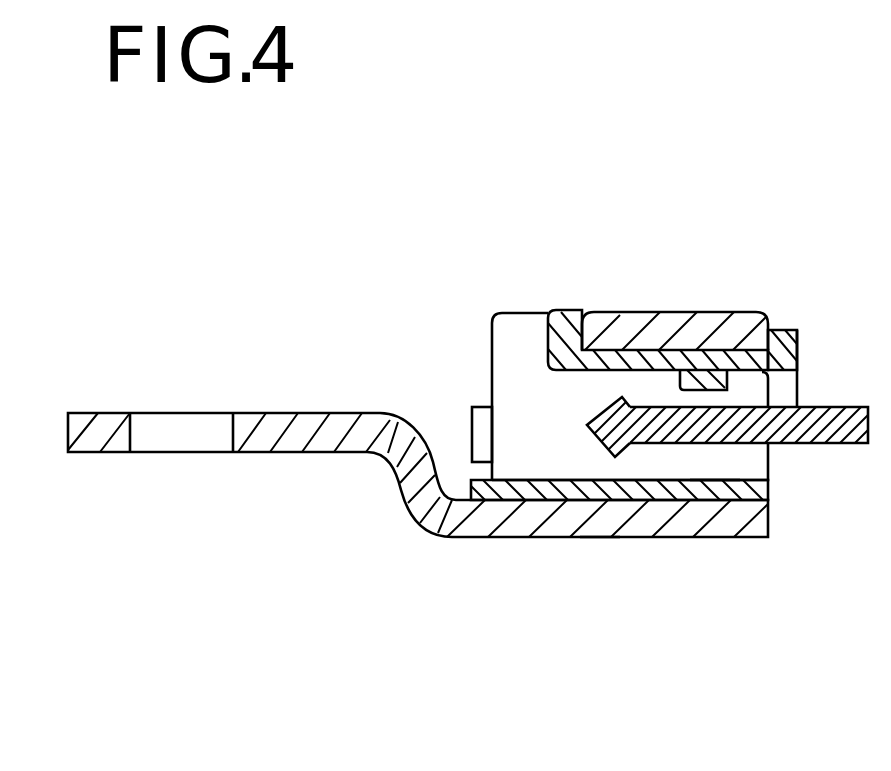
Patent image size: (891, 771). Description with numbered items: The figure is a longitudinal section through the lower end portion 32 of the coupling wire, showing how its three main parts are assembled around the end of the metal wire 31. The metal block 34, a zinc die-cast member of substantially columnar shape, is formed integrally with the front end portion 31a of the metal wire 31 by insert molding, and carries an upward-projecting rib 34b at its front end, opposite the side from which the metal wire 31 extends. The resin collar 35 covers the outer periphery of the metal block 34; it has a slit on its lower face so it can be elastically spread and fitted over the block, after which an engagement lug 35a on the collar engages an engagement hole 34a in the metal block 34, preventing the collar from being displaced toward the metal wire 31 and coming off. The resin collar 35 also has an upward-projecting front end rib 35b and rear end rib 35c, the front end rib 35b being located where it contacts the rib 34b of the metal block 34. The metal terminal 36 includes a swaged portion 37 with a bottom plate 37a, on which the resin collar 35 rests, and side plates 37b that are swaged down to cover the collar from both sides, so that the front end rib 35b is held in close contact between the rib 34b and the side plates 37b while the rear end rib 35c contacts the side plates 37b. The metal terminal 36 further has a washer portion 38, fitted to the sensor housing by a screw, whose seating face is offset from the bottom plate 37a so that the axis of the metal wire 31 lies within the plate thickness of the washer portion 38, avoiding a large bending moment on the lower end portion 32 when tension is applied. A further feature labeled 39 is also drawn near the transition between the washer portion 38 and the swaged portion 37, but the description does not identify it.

The lower end portion 32 is at (370, 122).
The metal wire 31 is at (820, 443).
The front end portion 31a is at (594, 402).
The metal block 34 is at (453, 537).
The engagement hole 34a is at (679, 373).
The rib 34b is at (522, 313).
The resin collar 35 is at (583, 490).
The engagement lug 35a is at (700, 388).
The front end rib 35b is at (558, 310).
The rear end rib 35c is at (785, 328).
The metal terminal 36 is at (398, 333).
The swaged portion 37 is at (528, 580).
The bottom plate 37a is at (600, 537).
The side plates 37b is at (682, 312).
The washer portion 38 is at (280, 413).
The engaging projection 39 is at (477, 498).